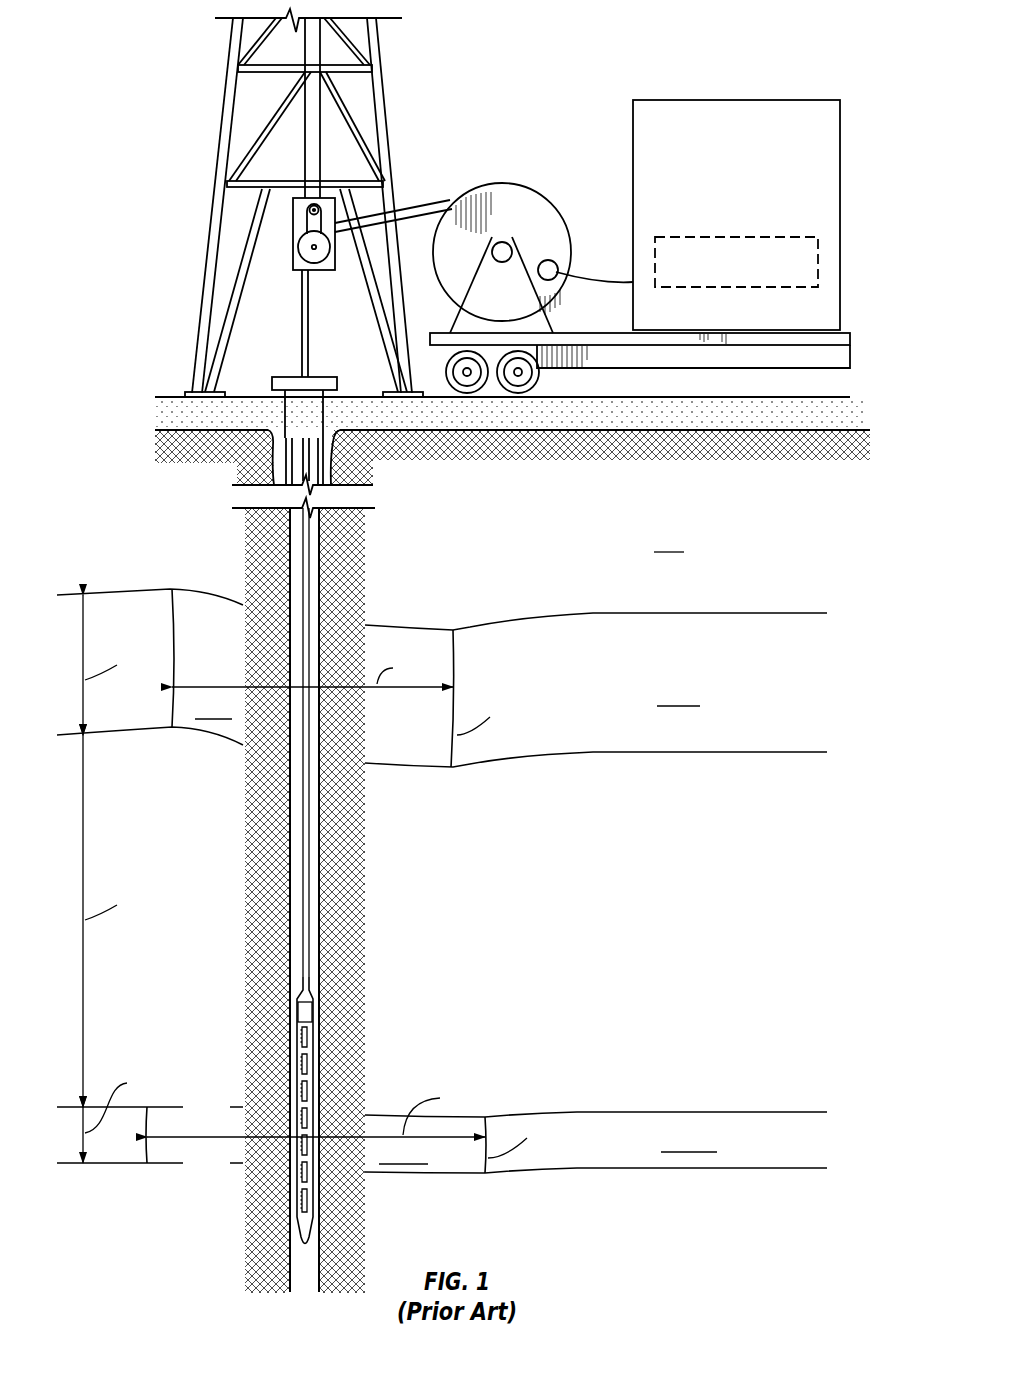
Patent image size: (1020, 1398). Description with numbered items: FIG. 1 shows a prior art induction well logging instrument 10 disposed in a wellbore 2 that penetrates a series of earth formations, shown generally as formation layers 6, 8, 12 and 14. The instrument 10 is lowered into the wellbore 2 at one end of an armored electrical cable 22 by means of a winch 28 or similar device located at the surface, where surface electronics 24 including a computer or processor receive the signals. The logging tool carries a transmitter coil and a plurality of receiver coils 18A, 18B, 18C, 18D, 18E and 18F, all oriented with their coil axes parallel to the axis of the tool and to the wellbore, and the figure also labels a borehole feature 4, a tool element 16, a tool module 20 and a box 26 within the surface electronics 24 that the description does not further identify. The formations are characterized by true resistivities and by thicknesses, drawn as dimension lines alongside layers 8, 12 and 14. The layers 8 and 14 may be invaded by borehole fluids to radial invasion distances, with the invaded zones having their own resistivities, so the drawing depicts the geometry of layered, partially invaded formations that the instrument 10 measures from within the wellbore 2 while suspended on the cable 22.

The wellbore 2 is at (295, 597).
The borehole wall 4 is at (295, 658).
The earth formation 6 is at (474, 552).
The earth formation 8 is at (637, 625).
The induction well logging instrument 10 is at (301, 1110).
The earth formation 12 is at (492, 949).
The earth formation 14 is at (623, 1120).
The transmitter 16 is at (303, 1038).
The receiver coil 18A is at (303, 1067).
The receiver coil 18B is at (303, 1093).
The receiver coil 18C is at (303, 1120).
The receiver coil 18D is at (303, 1143).
The receiver coil 18E is at (303, 1172).
The receiver coil 18F is at (303, 1207).
The electronics module 20 is at (312, 1008).
The armored electrical cable 22 is at (298, 568).
The surface electronics 24 is at (807, 100).
The computer 26 is at (773, 237).
The winch 28 is at (502, 184).